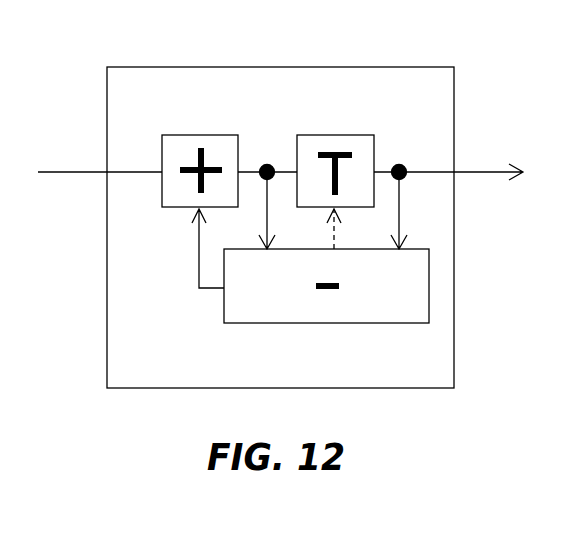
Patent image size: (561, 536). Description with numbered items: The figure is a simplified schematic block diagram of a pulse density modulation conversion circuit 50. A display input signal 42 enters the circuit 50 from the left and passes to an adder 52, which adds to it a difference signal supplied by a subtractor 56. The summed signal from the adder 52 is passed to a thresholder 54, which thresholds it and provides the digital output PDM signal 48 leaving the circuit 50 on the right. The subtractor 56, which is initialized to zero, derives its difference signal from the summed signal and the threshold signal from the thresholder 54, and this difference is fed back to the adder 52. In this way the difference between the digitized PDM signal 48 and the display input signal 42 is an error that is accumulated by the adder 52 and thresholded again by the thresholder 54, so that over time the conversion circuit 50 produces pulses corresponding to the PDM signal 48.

The display input signal 42 is at (59, 172).
The output PDM signal 48 is at (483, 172).
The conversion circuit 50 is at (205, 67).
The adder 52 is at (200, 135).
The thresholder 54 is at (332, 135).
The subtractor 56 is at (317, 323).